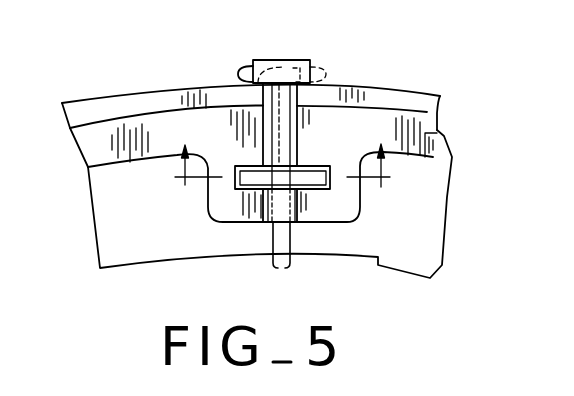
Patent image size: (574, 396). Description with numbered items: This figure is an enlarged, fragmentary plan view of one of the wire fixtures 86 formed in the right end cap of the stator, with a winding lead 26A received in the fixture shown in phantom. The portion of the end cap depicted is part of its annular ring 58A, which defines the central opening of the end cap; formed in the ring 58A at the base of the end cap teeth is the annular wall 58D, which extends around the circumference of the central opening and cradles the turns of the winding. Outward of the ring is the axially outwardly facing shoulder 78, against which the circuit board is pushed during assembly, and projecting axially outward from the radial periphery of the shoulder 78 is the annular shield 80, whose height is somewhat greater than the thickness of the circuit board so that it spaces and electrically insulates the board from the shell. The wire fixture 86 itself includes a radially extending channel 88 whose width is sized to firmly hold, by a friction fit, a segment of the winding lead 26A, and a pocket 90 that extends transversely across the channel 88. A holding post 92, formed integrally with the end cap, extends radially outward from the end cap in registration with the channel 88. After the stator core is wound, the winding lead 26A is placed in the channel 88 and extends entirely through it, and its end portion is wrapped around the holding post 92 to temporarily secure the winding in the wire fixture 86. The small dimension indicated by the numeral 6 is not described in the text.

The annular ring 58A is at (110, 98).
The annular shield 80 is at (427, 97).
The axially outwardly facing shoulder 78 is at (437, 133).
The annular wall 58D is at (432, 238).
The holding post 92 is at (280, 60).
The wire fixture 86 is at (340, 66).
The radially extending channel 88 is at (296, 140).
The pocket 90 is at (303, 188).
The winding lead 26A is at (273, 245).
The gap 6 is at (282, 150).